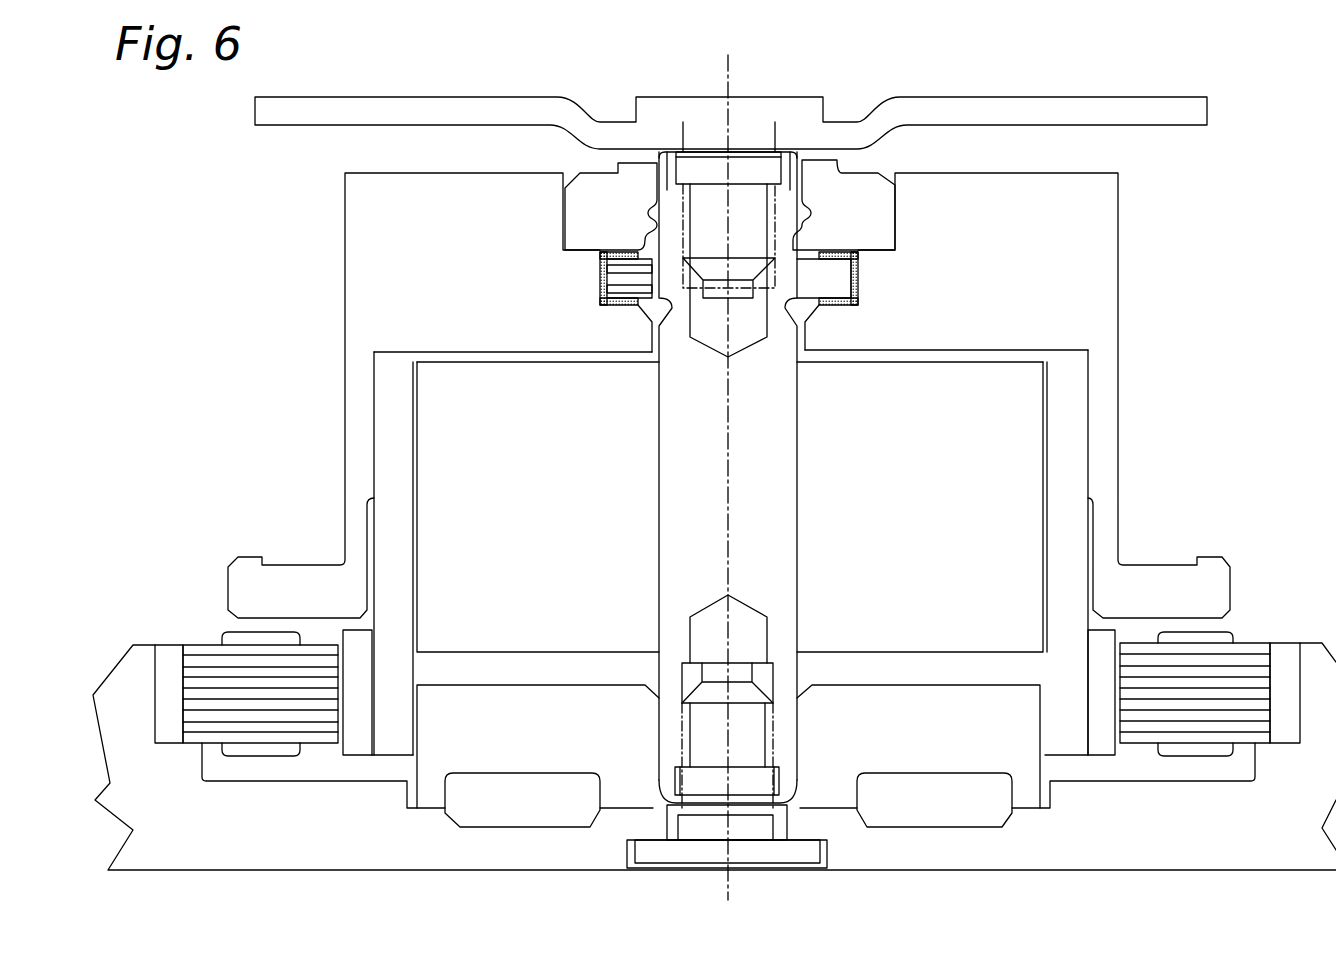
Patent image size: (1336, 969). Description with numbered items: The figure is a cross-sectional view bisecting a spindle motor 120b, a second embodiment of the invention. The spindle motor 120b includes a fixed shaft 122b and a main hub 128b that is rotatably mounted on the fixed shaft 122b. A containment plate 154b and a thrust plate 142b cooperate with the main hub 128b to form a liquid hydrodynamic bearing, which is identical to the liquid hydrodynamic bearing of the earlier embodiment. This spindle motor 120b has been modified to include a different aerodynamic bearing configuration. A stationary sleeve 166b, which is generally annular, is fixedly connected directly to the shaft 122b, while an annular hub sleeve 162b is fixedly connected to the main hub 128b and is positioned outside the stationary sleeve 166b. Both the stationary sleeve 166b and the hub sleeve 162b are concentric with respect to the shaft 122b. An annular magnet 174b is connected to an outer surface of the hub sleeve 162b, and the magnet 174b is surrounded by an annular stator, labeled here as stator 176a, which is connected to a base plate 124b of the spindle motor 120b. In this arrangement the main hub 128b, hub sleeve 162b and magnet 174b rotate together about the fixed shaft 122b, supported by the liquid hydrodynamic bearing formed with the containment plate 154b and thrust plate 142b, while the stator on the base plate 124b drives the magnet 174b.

The spindle motor 120b is at (202, 380).
The fixed shaft 122b is at (800, 495).
The base plate 124b is at (935, 872).
The main hub 128b is at (1118, 282).
The thrust plate 142b is at (837, 283).
The containment plate 154b is at (578, 172).
The hub sleeve 162b is at (1075, 458).
The stationary sleeve 166b is at (1020, 508).
The magnet 174b is at (1102, 740).
The stator coil 176a is at (1255, 642).